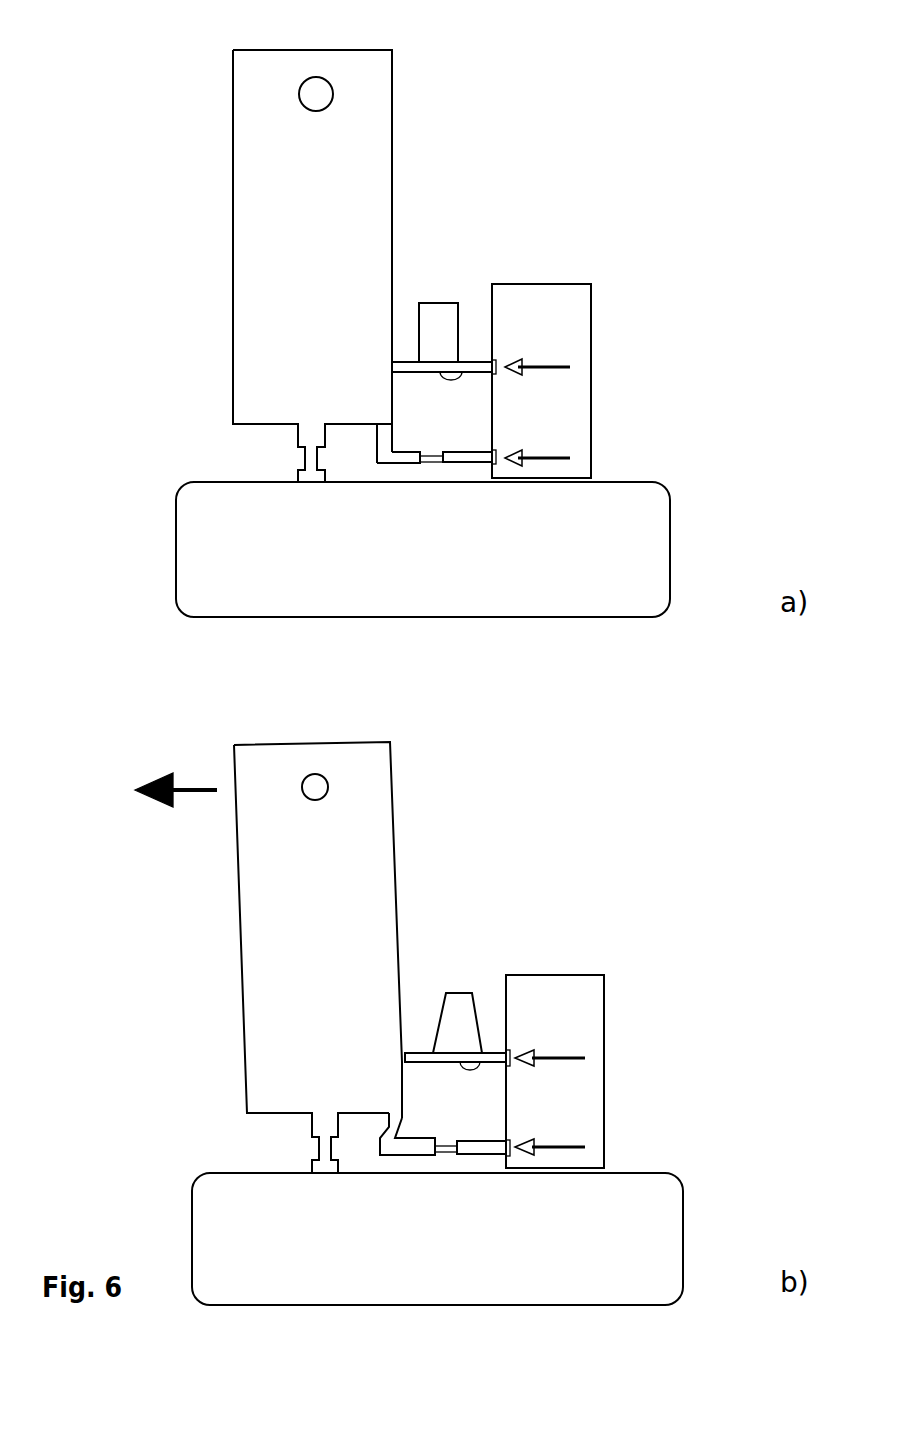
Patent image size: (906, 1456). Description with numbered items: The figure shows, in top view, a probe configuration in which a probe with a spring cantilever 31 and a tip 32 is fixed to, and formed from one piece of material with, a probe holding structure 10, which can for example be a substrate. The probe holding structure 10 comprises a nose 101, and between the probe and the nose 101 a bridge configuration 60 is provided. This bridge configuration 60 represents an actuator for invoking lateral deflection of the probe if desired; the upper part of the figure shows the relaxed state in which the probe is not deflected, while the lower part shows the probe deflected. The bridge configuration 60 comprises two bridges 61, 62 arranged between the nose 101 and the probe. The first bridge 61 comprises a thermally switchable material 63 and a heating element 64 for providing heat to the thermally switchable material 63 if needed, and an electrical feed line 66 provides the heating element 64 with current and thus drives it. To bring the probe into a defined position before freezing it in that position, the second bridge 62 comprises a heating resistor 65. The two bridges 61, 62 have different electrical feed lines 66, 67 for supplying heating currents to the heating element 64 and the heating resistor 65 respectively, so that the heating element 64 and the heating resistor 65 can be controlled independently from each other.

The probe holding structure 10 is at (660, 525).
The spring cantilever 31 is at (193, 157).
The tip 32 is at (316, 77).
The bridge configuration 60 is at (442, 244).
The first bridge 61 is at (402, 380).
The second bridge 62 is at (389, 474).
The thermally switchable material 63 is at (450, 303).
The heating element 64 is at (470, 362).
The heating resistor 65 is at (433, 465).
The electrical feed line 66 is at (462, 382).
The electrical feed line 67 is at (477, 465).
The nose 101 is at (591, 310).